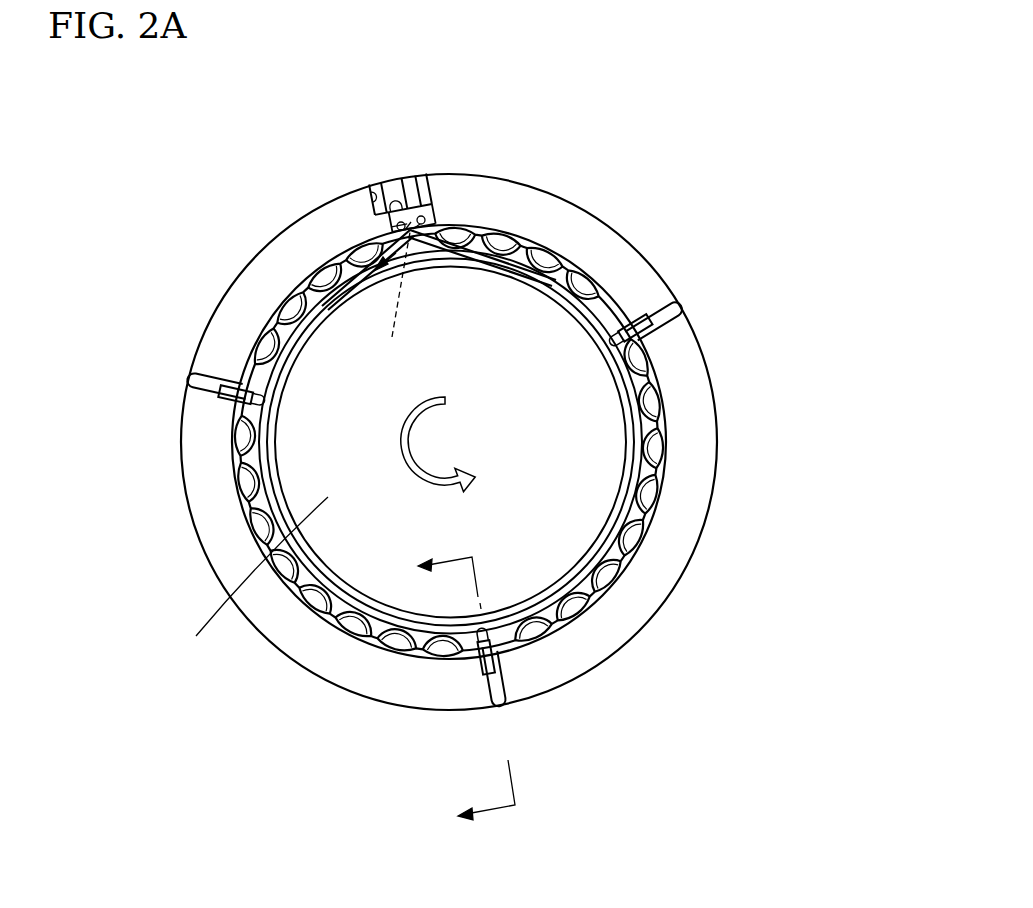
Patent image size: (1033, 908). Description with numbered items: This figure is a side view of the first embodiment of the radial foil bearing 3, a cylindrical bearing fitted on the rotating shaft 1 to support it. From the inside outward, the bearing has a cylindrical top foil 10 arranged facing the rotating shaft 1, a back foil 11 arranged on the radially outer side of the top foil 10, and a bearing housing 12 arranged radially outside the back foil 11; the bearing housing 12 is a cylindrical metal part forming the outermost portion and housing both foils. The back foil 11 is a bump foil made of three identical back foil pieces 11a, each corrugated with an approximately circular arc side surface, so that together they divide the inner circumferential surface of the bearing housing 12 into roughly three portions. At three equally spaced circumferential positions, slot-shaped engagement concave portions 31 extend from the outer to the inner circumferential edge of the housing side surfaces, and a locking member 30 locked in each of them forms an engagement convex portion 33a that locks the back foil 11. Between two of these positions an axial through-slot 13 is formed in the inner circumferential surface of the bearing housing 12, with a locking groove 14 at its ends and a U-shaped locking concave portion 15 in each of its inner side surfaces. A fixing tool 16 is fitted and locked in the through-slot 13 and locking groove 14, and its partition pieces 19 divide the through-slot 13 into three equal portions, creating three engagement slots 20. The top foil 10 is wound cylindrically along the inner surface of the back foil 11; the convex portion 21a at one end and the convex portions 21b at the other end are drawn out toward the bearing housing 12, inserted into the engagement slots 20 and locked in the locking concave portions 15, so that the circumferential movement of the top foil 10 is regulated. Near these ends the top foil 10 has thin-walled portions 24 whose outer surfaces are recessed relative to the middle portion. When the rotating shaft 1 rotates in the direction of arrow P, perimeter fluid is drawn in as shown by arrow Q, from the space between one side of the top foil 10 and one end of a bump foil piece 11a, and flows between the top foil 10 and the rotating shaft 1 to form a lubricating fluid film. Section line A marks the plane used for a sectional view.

The rotating shaft 1 is at (255, 580).
The radial foil bearing 3 is at (577, 180).
The top foil 10 is at (640, 470).
The back foil 11 is at (499, 458).
The back foil piece 11a is at (256, 522).
The bearing housing 12 is at (485, 188).
The through-slot 13 is at (412, 210).
The locking groove 14 is at (390, 188).
The locking concave portion 15 is at (407, 214).
The fixing tool 16 is at (408, 186).
The partition piece 19 is at (412, 212).
The engagement slot 20 is at (406, 203).
The convex portion 21a is at (397, 302).
The convex portion 21b is at (422, 222).
The thin-walled portion 24 is at (370, 265).
The locking member 30 is at (640, 323).
The engagement concave portion 31 is at (677, 302).
The engagement convex portion 33a is at (623, 323).
The rotation direction arrow P is at (423, 444).
The fluid inflow arrow Q is at (397, 278).
The section line A is at (463, 692).